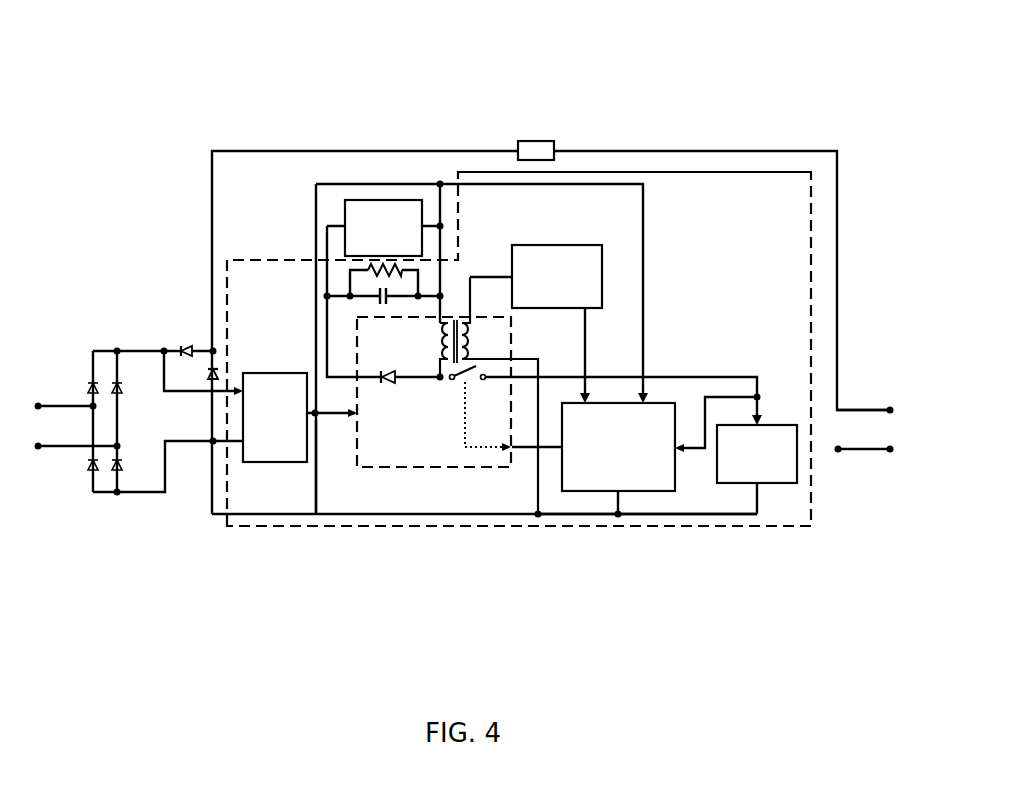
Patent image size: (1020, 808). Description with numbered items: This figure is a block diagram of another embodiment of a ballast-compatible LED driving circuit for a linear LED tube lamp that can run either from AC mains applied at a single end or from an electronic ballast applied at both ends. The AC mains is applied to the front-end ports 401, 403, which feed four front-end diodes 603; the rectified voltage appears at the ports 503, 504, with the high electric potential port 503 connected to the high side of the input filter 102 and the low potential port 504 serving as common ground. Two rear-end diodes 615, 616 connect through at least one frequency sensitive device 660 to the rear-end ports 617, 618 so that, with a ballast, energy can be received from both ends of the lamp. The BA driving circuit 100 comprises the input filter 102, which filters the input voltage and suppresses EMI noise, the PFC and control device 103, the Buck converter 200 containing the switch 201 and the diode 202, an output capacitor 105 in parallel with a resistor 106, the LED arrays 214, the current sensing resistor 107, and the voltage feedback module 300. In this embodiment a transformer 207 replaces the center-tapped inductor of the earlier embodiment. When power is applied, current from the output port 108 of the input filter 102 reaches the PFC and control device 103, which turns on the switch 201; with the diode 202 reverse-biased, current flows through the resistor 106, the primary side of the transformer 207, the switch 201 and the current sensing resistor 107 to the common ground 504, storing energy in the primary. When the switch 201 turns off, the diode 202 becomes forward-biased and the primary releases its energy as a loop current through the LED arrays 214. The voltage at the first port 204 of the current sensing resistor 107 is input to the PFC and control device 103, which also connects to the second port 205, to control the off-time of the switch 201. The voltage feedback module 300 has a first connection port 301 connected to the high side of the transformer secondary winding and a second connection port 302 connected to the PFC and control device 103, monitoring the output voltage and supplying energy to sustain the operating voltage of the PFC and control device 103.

The BA driving circuit 100 is at (457, 158).
The input filter 102 is at (275, 371).
The PFC and control device 103 is at (578, 495).
The output capacitor 105 is at (366, 294).
The resistor 106 is at (398, 283).
The current sensing resistor 107 is at (767, 486).
The output port 108 is at (317, 418).
The Buck converter 200 is at (484, 480).
The switch 201 is at (460, 383).
The diode 202 is at (385, 383).
The first port 204 is at (759, 393).
The second port 205 is at (673, 522).
The transformer 207 is at (472, 335).
The LED arrays 214 is at (368, 198).
The voltage feedback module 300 is at (552, 243).
The first connection port 301 is at (473, 270).
The second connection port 302 is at (586, 365).
The port 401 is at (92, 406).
The port 403 is at (122, 450).
The port 503 is at (163, 347).
The port 504 is at (209, 448).
The front-end diodes 603 is at (103, 340).
The rear-end diode 615 is at (184, 344).
The rear-end diode 616 is at (213, 363).
The port 617 is at (889, 408).
The port 618 is at (890, 460).
The frequency sensitive device 660 is at (540, 139).